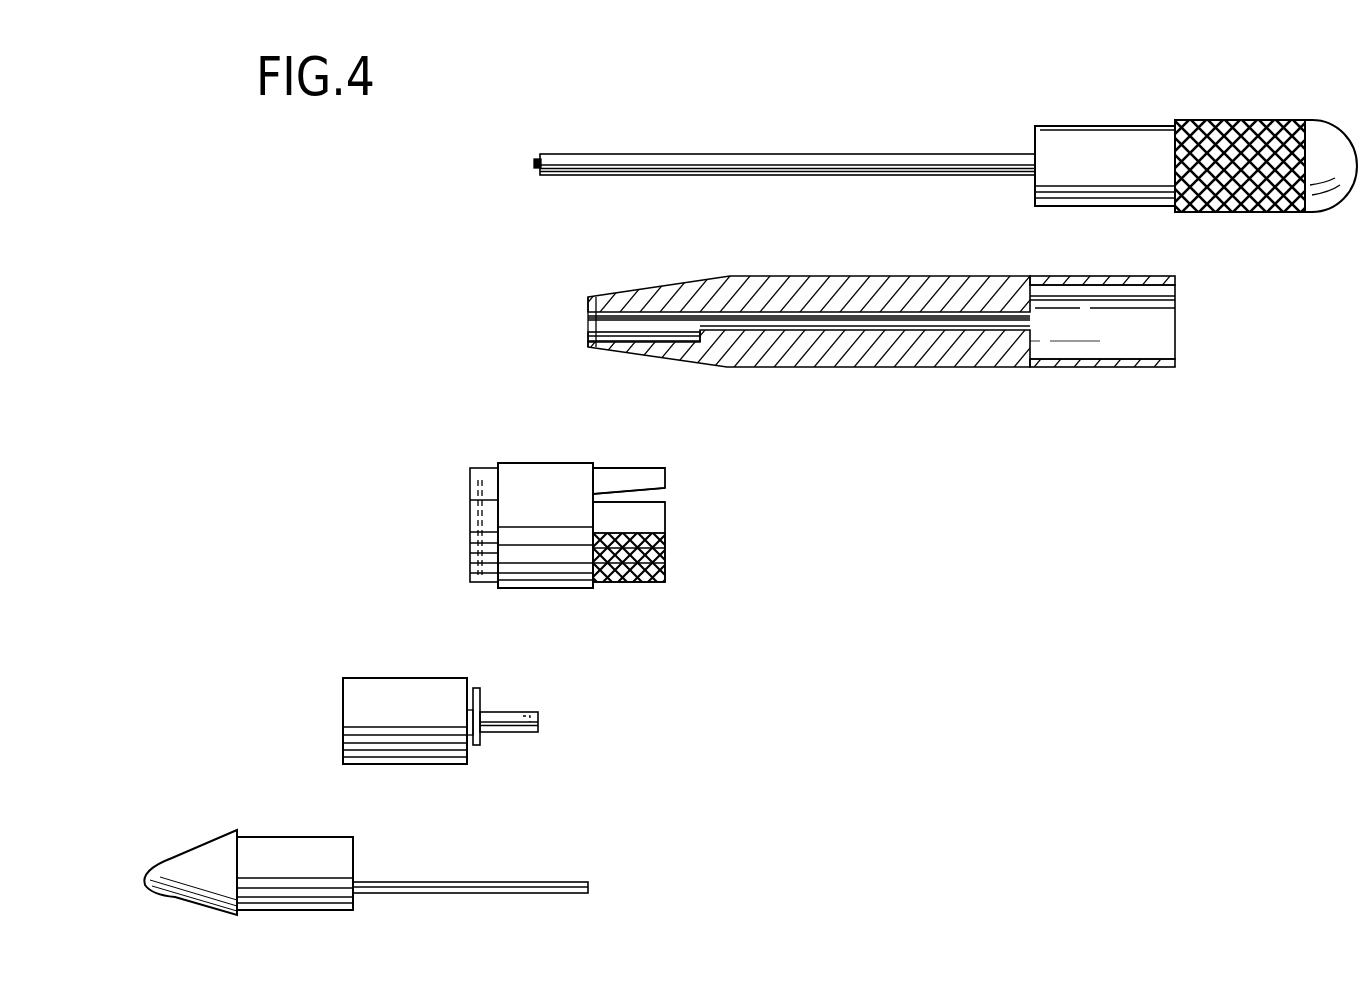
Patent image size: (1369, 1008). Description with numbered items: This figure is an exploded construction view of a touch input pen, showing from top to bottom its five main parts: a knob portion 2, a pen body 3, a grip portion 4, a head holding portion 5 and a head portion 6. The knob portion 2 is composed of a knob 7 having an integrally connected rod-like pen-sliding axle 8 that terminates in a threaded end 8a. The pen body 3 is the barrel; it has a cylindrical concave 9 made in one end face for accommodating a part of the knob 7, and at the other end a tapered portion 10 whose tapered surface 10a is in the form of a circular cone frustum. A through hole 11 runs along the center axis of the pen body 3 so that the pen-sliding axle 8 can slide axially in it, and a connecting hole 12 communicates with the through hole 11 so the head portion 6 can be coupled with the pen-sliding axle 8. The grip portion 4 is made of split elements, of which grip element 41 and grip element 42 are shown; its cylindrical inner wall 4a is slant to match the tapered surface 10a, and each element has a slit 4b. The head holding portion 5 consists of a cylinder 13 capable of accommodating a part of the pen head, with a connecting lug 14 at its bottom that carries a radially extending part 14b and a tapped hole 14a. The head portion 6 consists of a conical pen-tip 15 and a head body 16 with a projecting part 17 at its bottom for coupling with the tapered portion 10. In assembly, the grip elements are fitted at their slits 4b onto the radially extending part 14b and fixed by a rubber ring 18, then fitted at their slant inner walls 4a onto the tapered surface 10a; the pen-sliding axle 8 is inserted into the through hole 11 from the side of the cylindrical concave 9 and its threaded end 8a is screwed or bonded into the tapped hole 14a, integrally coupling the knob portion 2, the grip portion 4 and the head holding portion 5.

The knob portion 2 is at (860, 132).
The knob 7 is at (1228, 122).
The pen-sliding axle 8 is at (693, 160).
The threaded end 8a is at (537, 162).
The pen body 3 is at (896, 273).
The tapered portion 10 is at (704, 284).
The tapered surface 10a is at (632, 289).
The through hole 11 is at (920, 318).
The connecting hole 12 is at (622, 321).
The cylindrical concave 9 is at (1086, 341).
The grip portion 4 is at (539, 460).
The grip element 41 is at (628, 471).
The cylindrical inner wall 4a is at (665, 490).
The slit 4b is at (472, 521).
The grip element 42 is at (648, 580).
The rubber ring 18 is at (541, 580).
The head holding portion 5 is at (340, 694).
The cylinder 13 is at (412, 698).
The connecting lug 14 is at (510, 736).
The tapped hole 14a is at (540, 721).
The radially extending part 14b is at (482, 694).
The head portion 6 is at (262, 829).
The conical pen-tip 15 is at (174, 858).
The head body 16 is at (313, 848).
The projecting part 17 is at (408, 882).